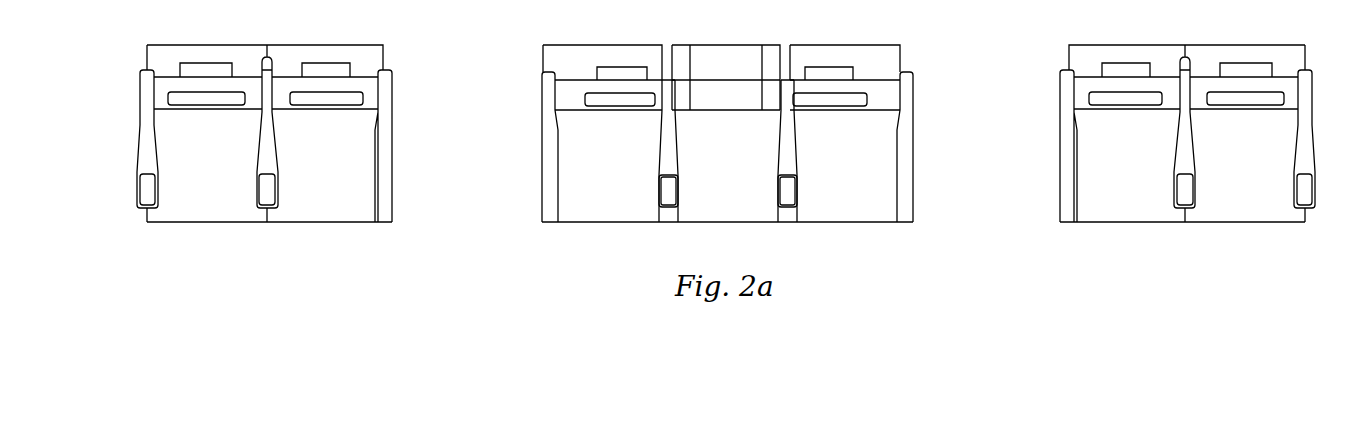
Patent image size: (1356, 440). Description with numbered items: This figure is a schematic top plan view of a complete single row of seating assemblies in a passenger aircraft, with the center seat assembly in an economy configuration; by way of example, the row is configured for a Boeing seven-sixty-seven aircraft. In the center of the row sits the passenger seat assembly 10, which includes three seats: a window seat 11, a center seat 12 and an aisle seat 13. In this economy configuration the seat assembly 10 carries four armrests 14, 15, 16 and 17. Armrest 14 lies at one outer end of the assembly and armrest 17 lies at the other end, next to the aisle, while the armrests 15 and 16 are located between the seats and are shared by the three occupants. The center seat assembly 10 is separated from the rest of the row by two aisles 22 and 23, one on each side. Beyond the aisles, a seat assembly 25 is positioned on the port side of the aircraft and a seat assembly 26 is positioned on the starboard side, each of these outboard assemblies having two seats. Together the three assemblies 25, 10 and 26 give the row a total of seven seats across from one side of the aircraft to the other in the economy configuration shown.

The passenger seat assembly 10 is at (520, 36).
The window seat 11 is at (618, 176).
The center seat 12 is at (740, 176).
The aisle seat 13 is at (852, 177).
The armrest 14 is at (547, 203).
The armrest 15 is at (665, 200).
The armrest 16 is at (787, 202).
The armrest 17 is at (907, 207).
The aisle 22 is at (477, 151).
The aisle 23 is at (995, 152).
The seat assembly 25 is at (116, 136).
The seat assembly 26 is at (1324, 128).